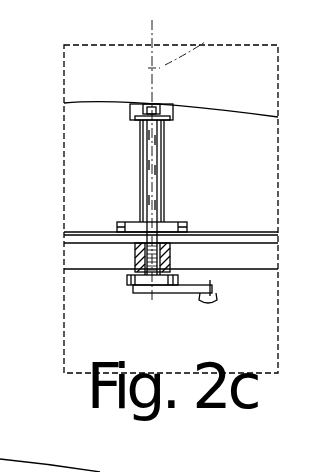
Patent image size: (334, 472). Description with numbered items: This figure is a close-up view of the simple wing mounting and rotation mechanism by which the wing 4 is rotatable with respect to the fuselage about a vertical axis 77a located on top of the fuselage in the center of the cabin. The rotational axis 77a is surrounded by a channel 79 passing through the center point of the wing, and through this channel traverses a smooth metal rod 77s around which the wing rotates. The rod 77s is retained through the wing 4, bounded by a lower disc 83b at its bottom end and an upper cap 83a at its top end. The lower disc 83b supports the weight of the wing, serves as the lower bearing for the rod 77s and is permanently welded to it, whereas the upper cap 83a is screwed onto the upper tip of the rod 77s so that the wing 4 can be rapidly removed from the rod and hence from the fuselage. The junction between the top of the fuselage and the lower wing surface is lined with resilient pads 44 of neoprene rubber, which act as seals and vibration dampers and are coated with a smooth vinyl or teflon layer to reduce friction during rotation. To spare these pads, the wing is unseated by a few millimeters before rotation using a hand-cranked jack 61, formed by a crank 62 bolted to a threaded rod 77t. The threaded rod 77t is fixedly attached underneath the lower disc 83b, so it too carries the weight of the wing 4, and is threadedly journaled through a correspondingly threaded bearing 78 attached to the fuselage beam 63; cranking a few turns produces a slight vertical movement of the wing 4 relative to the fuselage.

The wing 4 is at (86, 103).
The vertical axis 77a is at (187, 47).
The upper cap 83a is at (165, 116).
The smooth metal rod 77s is at (150, 162).
The channel 79 is at (164, 168).
The lower disc 83b is at (180, 222).
The resilient pad 44 is at (248, 242).
The fuselage beam 63 is at (73, 257).
The threaded bearing 78 is at (135, 250).
The threaded rod 77t is at (172, 272).
The hand-cranked jack 61 is at (143, 296).
The crank 62 is at (177, 293).